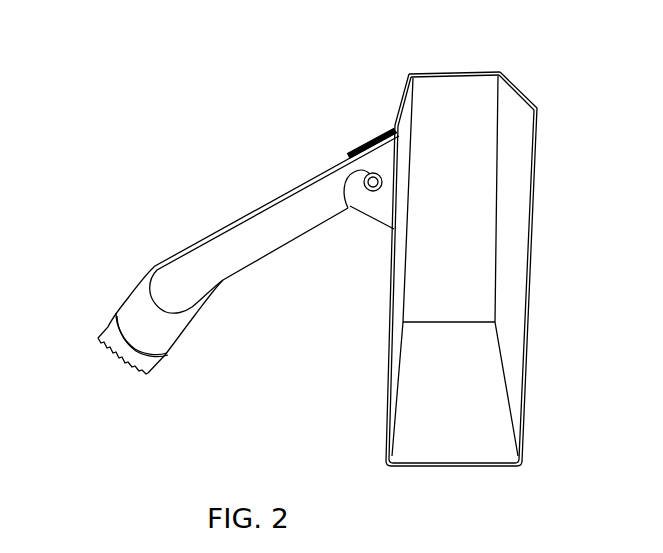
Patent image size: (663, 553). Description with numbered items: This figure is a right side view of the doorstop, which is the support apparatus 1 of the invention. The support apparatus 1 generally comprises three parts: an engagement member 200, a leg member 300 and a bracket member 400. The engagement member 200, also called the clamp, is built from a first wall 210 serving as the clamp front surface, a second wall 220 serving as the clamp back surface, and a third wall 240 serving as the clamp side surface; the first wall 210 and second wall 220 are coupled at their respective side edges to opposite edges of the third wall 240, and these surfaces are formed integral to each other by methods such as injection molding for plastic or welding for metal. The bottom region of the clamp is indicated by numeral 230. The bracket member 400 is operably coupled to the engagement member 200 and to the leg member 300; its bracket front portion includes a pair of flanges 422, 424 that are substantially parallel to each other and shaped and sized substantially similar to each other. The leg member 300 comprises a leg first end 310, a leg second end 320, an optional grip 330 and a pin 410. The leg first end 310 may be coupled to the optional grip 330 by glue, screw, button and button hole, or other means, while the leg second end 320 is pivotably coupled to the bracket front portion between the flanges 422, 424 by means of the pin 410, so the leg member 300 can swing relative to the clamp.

The support apparatus 1 is at (155, 121).
The engagement member 200 is at (579, 173).
The first wall 210 is at (388, 353).
The second wall 220 is at (532, 275).
The bottom wall 230 is at (455, 445).
The third wall 240 is at (453, 90).
The leg member 300 is at (222, 190).
The leg first end 310 is at (132, 310).
The leg second end 320 is at (347, 207).
The grip 330 is at (115, 350).
The bracket member 400 is at (374, 115).
The pin 410 is at (364, 180).
The flange 422 is at (378, 138).
The flange 424 is at (382, 208).